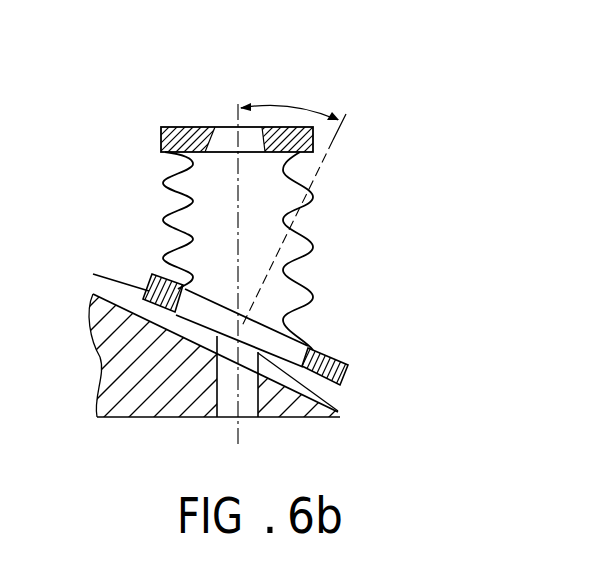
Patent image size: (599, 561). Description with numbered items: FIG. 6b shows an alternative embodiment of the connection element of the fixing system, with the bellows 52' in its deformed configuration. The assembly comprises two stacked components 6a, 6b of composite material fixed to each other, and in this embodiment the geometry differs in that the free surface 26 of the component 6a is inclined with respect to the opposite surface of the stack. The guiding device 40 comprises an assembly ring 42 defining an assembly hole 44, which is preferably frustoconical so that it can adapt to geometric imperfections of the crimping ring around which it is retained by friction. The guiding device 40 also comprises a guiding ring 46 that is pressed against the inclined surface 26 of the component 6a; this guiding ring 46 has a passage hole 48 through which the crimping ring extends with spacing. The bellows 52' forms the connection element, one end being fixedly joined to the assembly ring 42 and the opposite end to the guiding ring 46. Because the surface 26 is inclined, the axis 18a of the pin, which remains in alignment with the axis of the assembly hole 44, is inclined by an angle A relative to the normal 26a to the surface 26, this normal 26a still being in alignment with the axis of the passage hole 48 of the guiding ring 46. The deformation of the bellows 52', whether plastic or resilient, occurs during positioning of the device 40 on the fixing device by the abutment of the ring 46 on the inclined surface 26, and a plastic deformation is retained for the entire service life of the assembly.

The component 6a is at (338, 409).
The component 6b is at (301, 406).
The passage hole 48 is at (178, 313).
The free surface 26 is at (346, 380).
The guiding ring 46 is at (143, 298).
The assembly ring 42 is at (160, 141).
The bellows 52' is at (139, 220).
The assembly hole 44 is at (285, 167).
The guiding device 40 is at (226, 98).
The angle A is at (292, 108).
The normal 26a is at (336, 137).
The axis 18a is at (241, 433).